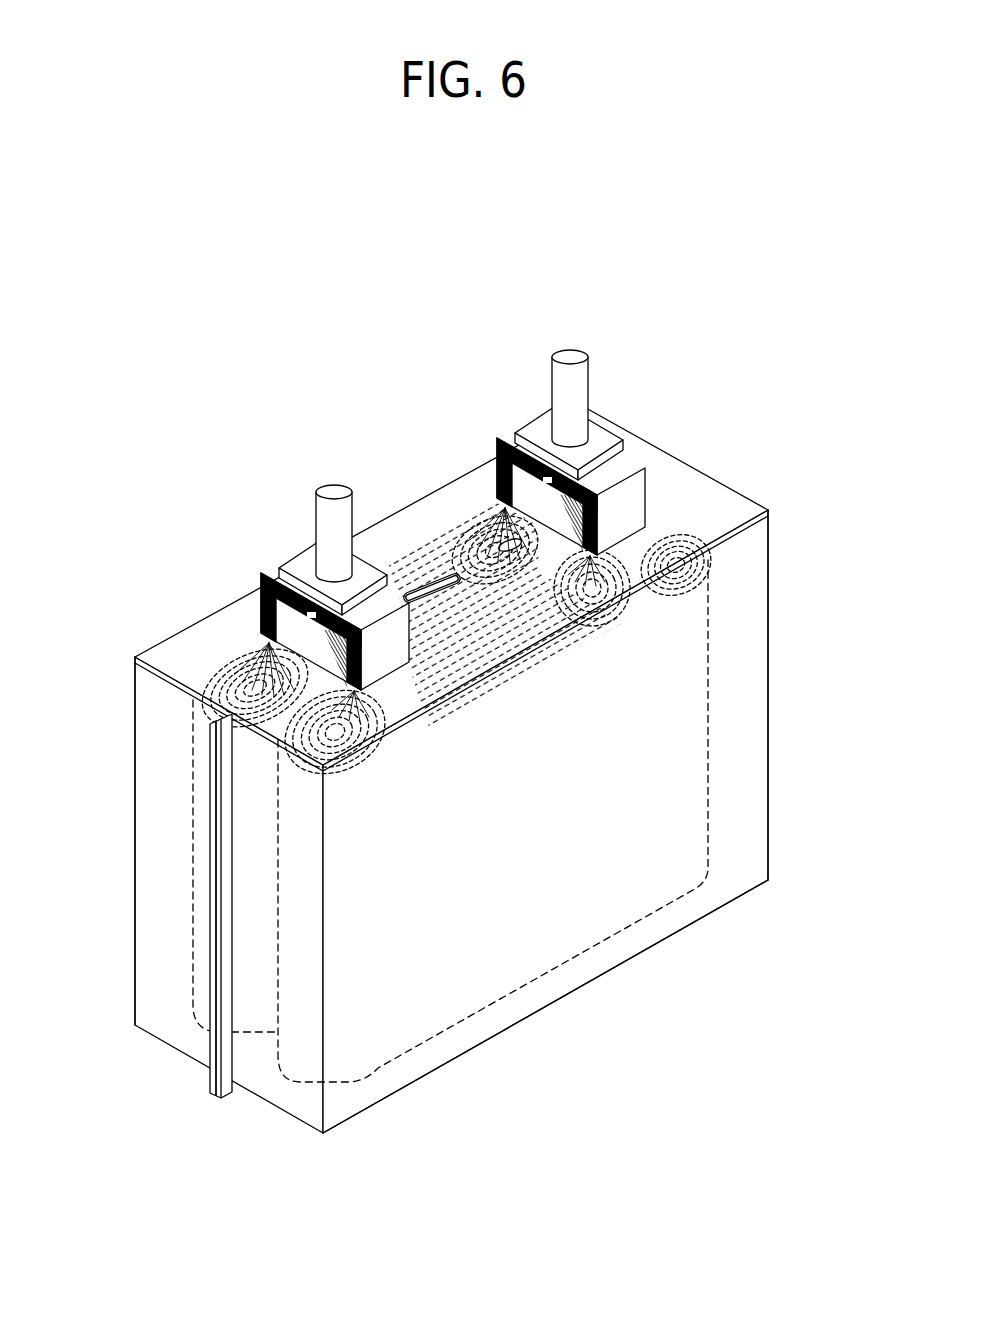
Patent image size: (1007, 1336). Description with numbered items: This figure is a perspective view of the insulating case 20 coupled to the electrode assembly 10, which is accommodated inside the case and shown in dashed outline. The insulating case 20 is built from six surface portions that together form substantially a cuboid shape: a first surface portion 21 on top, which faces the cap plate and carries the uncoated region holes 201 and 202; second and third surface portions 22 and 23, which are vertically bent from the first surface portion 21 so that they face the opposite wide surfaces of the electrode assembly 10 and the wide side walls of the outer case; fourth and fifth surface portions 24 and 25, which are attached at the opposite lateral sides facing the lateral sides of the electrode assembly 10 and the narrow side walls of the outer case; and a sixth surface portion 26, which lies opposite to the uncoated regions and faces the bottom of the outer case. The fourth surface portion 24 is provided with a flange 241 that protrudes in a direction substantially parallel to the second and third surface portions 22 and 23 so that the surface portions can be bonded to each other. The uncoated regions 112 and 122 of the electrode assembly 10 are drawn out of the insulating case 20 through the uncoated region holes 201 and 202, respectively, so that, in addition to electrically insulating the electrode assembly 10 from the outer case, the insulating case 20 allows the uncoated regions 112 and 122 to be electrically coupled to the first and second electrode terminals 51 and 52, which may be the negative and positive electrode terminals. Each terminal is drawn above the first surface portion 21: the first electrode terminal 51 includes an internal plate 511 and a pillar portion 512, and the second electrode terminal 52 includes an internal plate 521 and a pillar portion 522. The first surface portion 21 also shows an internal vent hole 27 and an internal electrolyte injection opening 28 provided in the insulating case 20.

The electrode assembly 10 is at (708, 690).
The insulating case 20 is at (448, 807).
The first surface portion 21 is at (190, 640).
The second surface portion 22 is at (133, 718).
The third surface portion 23 is at (420, 1060).
The fourth surface portion 24 is at (270, 1080).
The flange 241 is at (210, 1045).
The fifth surface portion 25 is at (768, 740).
The sixth surface portion 26 is at (368, 1108).
The internal vent hole 27 is at (444, 572).
The internal electrolyte injection opening 28 is at (502, 540).
The uncoated region hole 201 is at (402, 668).
The uncoated region hole 202 is at (625, 533).
The first electrode terminal 51 is at (345, 604).
The internal plate 511 is at (303, 564).
The pillar portion 512 is at (338, 490).
The uncoated region 112 is at (272, 573).
The second electrode terminal 52 is at (625, 418).
The internal plate 521 is at (607, 436).
The pillar portion 522 is at (577, 355).
The uncoated region 122 is at (510, 438).